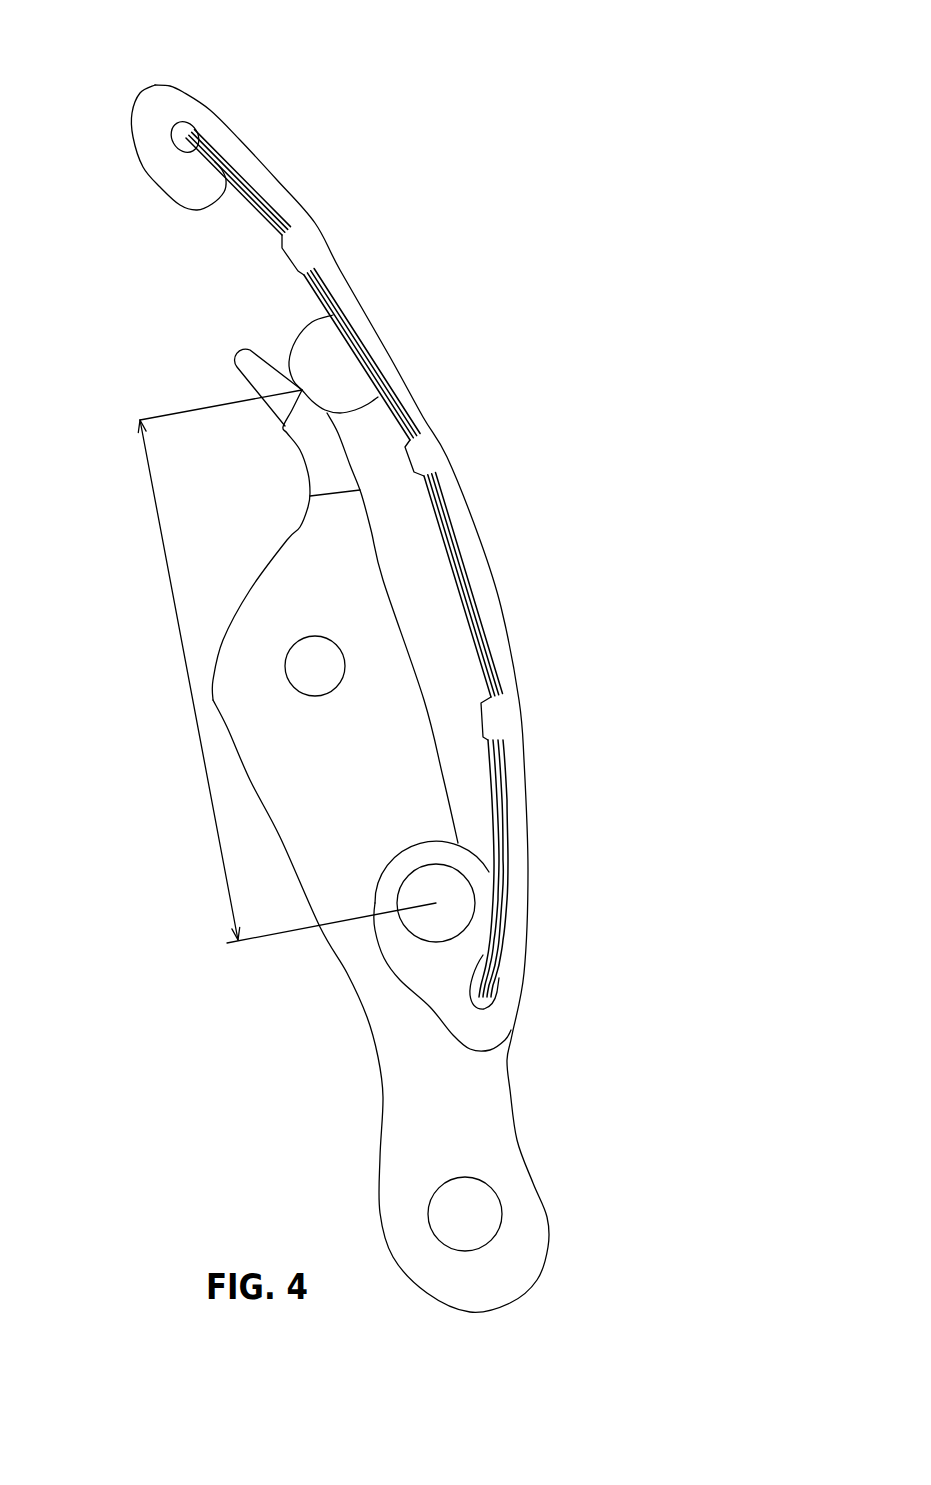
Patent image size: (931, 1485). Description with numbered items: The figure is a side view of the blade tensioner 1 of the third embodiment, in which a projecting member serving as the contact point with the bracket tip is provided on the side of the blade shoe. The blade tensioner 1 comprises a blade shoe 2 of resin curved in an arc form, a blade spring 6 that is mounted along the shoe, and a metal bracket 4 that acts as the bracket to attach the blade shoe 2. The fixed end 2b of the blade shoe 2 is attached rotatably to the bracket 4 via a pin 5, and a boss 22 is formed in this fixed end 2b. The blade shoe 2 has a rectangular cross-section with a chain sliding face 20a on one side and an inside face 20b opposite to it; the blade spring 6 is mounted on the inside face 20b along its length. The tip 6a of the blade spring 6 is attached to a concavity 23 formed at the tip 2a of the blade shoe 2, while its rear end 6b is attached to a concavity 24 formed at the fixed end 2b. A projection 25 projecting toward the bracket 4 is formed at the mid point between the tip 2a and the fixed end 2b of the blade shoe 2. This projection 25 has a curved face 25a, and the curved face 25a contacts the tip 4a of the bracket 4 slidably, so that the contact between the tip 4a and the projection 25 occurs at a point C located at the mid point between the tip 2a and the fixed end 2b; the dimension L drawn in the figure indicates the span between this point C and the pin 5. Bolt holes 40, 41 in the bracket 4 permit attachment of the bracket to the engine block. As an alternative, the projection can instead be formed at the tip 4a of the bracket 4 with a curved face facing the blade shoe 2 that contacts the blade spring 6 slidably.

The blade tensioner 1 is at (493, 407).
The blade shoe 2 is at (482, 547).
The tip of blade shoe 2a is at (155, 95).
The fixed end of blade shoe 2b is at (454, 1022).
The bracket 4 is at (345, 972).
The tip of bracket 4a is at (238, 357).
The pin 5 is at (463, 898).
The blade spring 6 is at (257, 217).
The tip of blade spring 6a is at (195, 132).
The rear end of blade spring 6b is at (493, 983).
The chain sliding face 20a is at (501, 613).
The inside face 20b is at (477, 650).
The boss 22 is at (403, 952).
The concavity 23 is at (188, 143).
The concavity 24 is at (482, 1005).
The projection 25 is at (312, 340).
The curved face 25a is at (289, 378).
The bolt hole 40 is at (318, 645).
The bolt hole 41 is at (493, 1207).
The contact point C is at (303, 391).
The lever arm length L is at (287, 666).